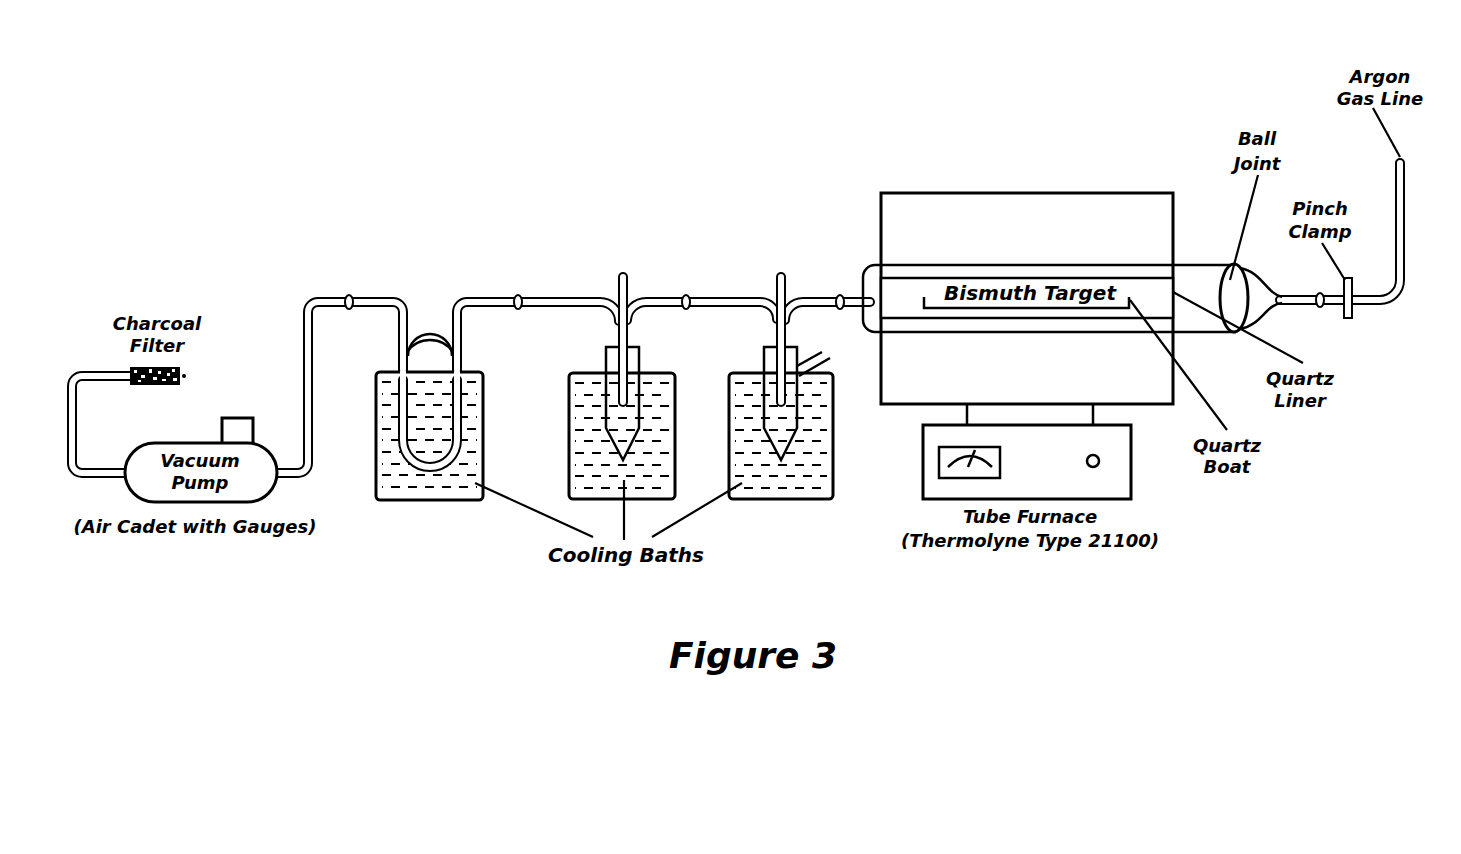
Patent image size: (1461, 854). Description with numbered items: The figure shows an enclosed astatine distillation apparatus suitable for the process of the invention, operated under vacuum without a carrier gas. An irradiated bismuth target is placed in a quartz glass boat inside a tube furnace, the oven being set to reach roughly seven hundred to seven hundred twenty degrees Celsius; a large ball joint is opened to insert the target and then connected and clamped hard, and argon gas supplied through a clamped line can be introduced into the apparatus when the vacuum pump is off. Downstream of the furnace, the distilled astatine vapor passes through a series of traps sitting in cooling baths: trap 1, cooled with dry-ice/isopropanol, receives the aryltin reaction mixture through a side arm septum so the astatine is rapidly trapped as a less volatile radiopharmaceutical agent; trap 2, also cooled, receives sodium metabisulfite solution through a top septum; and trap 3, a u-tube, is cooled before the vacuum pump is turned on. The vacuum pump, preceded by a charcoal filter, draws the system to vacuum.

The trap # 1 is at (791, 347).
The trap # 2 is at (620, 347).
The trap # 3 is at (429, 367).